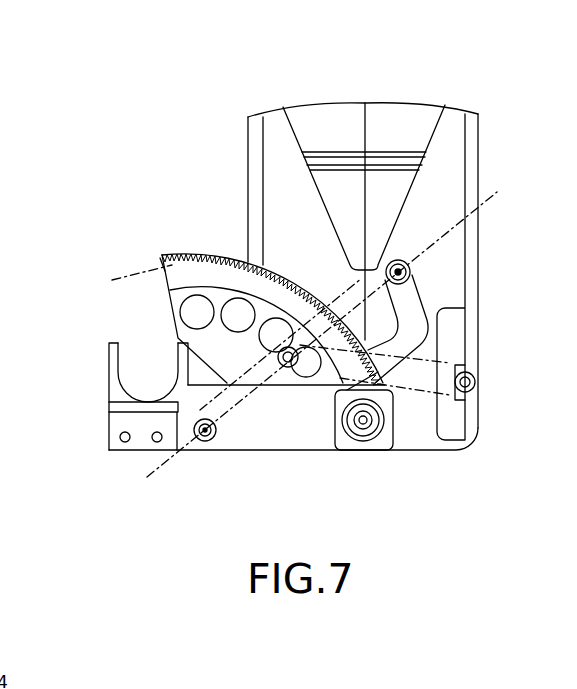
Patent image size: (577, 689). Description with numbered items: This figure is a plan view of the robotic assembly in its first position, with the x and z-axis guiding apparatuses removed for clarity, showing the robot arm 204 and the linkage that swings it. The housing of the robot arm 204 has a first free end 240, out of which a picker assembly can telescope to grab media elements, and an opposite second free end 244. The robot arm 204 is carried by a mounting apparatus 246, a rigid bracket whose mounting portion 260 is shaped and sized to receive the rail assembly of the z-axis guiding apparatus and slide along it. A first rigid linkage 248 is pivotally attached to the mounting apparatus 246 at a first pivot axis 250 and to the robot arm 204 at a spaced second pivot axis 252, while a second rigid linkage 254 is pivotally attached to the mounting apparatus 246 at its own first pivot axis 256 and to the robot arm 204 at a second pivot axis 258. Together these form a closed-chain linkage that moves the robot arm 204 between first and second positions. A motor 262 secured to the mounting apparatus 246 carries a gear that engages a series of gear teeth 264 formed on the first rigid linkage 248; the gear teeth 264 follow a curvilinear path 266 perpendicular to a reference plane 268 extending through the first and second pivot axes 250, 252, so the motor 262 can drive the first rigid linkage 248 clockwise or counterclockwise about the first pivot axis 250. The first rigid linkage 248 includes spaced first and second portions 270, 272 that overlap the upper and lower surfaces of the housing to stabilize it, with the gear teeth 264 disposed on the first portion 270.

The robot arm 204 is at (250, 186).
The first free end 240 is at (288, 108).
The second free end 244 is at (420, 450).
The mounting apparatus 246 is at (106, 405).
The first rigid linkage 248 is at (207, 252).
The first pivot axis 250 is at (205, 442).
The second pivot axis 252 is at (410, 273).
The second rigid linkage 254 is at (426, 354).
The first pivot axis 256 is at (287, 368).
The second pivot axis 258 is at (477, 382).
The mounting portion 260 is at (122, 378).
The motor 262 is at (377, 447).
The gear teeth 264 is at (170, 266).
The curvilinear path 266 is at (122, 278).
The reference plane 268 is at (148, 470).
The first portion 270 is at (287, 266).
The second portion 272 is at (243, 415).